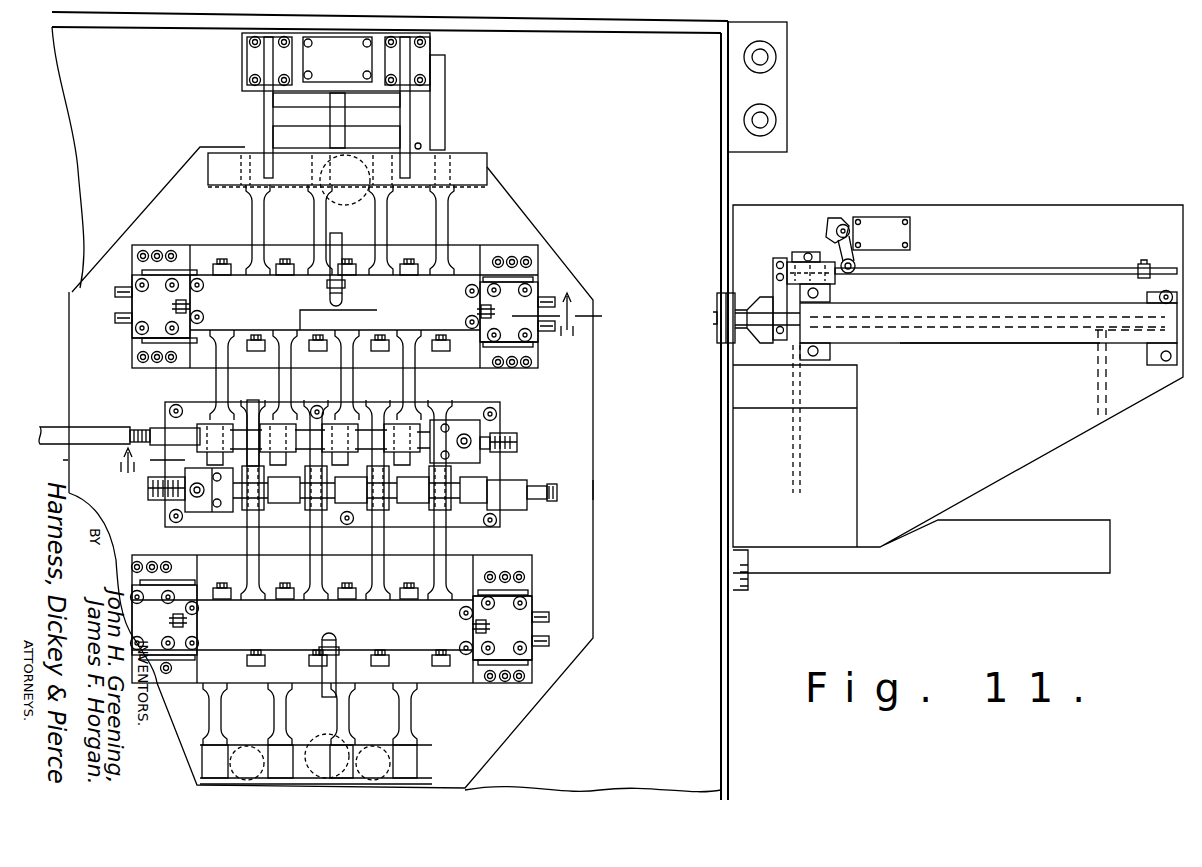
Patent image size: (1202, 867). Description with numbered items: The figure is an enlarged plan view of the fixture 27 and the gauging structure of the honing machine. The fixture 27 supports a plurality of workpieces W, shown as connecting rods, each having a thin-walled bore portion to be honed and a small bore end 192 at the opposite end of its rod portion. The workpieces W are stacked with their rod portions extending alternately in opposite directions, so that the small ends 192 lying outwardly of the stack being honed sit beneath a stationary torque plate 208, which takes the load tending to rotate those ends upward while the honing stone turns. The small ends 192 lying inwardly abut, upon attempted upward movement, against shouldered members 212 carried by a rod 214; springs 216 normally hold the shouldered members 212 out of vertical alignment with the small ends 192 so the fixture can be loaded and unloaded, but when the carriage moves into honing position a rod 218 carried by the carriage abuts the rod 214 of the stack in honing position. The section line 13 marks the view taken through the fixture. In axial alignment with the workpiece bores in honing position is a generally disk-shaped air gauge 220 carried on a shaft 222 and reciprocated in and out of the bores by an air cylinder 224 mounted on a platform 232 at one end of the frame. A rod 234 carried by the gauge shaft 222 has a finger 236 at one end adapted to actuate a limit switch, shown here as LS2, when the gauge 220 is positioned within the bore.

The stationary torque plate 208 is at (487, 170).
The shouldered members 212 is at (490, 490).
The rod 214 is at (525, 506).
The springs 216 is at (518, 442).
The rod 218 is at (40, 427).
The small bore portion 192 is at (238, 430).
The workpieces W is at (418, 540).
The section line of FIG. 13 is at (351, 386).
The fixture 27 is at (596, 494).
The air gauge 220 is at (718, 318).
The shaft 222 is at (905, 318).
The air cylinder 224 is at (990, 343).
The platform 232 is at (995, 428).
The rod 234 is at (1002, 268).
The finger 236 is at (1144, 262).
The limit switch LS2 is at (912, 240).